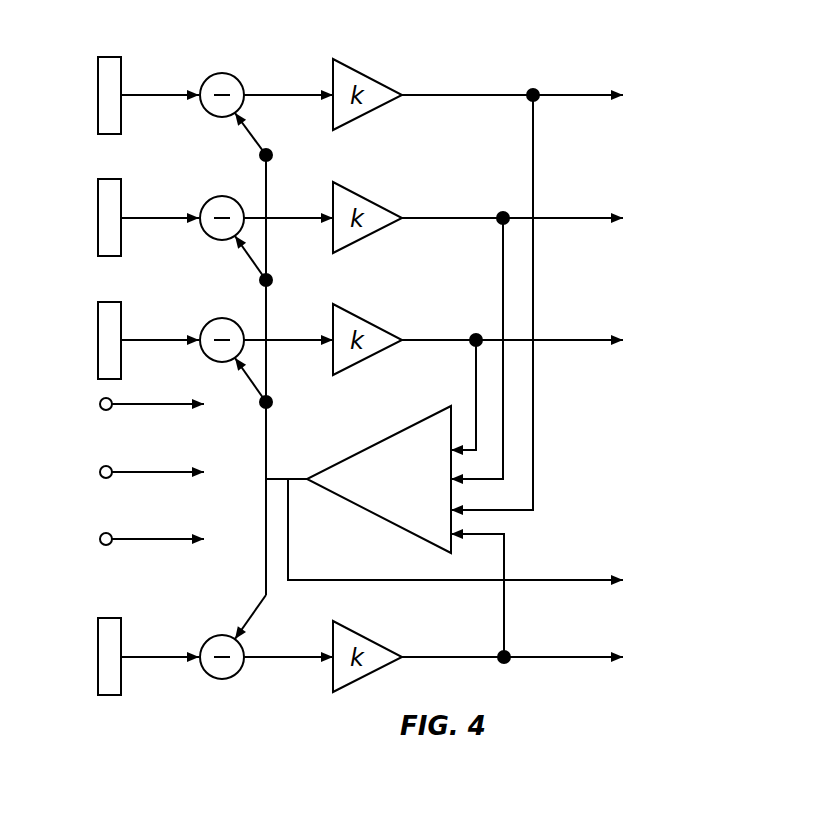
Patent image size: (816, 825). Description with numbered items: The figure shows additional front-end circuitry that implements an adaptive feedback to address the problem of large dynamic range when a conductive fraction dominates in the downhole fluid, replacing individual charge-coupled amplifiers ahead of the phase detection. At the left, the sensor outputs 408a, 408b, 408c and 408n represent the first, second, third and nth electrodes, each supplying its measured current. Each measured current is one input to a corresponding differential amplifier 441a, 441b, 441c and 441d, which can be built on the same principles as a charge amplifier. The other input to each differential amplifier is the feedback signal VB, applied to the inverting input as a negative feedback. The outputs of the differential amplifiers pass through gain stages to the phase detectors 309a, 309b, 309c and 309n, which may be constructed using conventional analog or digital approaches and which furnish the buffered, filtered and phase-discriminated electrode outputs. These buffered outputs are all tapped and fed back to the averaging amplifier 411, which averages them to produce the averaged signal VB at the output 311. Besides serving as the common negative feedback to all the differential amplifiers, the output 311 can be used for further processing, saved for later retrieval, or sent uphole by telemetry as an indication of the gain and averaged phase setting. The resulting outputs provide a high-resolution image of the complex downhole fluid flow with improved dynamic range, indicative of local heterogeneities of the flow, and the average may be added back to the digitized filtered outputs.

The sensor output 408a is at (101, 56).
The sensor output 408b is at (101, 178).
The sensor output 408c is at (101, 301).
The sensor output 408n is at (101, 617).
The differential amplifier 441a is at (222, 72).
The differential amplifier 441b is at (222, 195).
The differential amplifier 441c is at (222, 317).
The differential amplifier 441d is at (222, 634).
The phase detector 309a is at (684, 87).
The phase detector 309b is at (684, 210).
The phase detector 309c is at (684, 332).
The phase detector 309n is at (684, 649).
The averaging amplifier output VB 311 is at (684, 578).
The averaging amplifier 411 is at (397, 431).